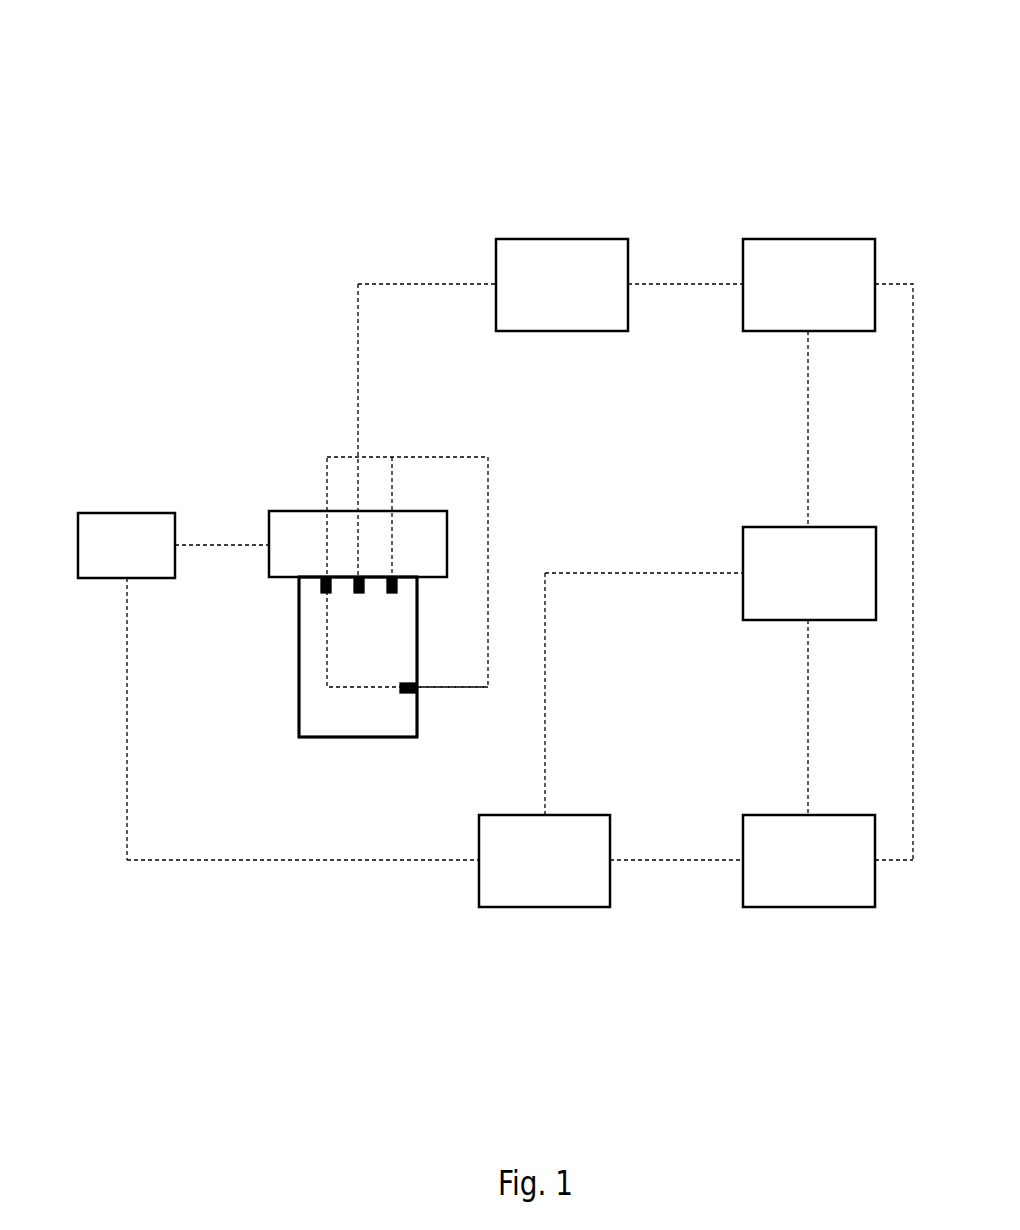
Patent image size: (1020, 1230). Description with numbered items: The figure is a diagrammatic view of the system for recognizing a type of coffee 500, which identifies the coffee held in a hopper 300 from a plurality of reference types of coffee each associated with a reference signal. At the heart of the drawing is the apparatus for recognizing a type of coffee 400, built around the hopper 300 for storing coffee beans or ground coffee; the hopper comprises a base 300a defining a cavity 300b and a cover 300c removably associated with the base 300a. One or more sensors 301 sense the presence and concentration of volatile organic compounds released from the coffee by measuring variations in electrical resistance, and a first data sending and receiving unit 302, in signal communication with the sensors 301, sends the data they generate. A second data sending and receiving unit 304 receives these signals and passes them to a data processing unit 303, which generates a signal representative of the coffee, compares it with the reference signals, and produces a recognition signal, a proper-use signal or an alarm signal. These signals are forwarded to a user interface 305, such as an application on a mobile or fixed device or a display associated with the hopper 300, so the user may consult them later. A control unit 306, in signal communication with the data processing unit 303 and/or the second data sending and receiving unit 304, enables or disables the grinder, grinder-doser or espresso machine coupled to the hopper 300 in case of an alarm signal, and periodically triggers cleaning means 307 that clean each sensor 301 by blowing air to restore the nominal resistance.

The system for recognizing a type of coffee 500 is at (287, 165).
The apparatus for recognizing a type of coffee 400 is at (477, 507).
The hopper 300 is at (293, 630).
The base 300a is at (297, 713).
The cavity 300b is at (342, 720).
The cover 300c is at (413, 530).
The sensors 301 is at (325, 573).
The first data sending and receiving unit 302 is at (544, 285).
The data processing unit 303 is at (785, 578).
The second data sending and receiving unit 304 is at (808, 285).
The user interface 305 is at (810, 885).
The control unit 306 is at (545, 885).
The cleaning means 307 is at (147, 526).